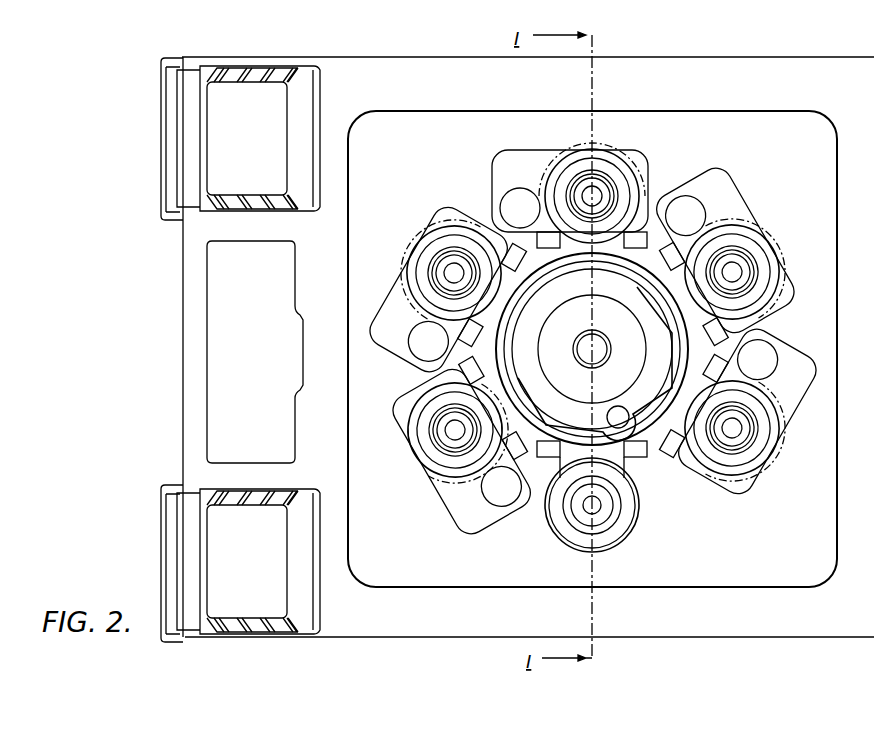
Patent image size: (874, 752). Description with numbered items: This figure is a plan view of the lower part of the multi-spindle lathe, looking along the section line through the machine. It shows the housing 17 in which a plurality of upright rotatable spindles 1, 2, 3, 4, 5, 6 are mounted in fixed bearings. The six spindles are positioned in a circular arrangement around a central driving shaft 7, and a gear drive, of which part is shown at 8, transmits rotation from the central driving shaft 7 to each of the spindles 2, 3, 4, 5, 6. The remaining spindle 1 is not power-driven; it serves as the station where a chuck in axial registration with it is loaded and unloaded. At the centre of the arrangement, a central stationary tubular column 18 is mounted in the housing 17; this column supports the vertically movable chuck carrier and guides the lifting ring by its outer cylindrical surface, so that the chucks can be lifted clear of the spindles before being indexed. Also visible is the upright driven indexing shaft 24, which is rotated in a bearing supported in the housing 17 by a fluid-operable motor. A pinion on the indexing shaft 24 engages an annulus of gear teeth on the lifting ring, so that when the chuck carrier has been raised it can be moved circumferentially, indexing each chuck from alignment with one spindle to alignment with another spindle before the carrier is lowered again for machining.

The spindle 1 is at (590, 503).
The spindle 2 is at (453, 438).
The spindle 3 is at (447, 274).
The spindle 4 is at (584, 194).
The spindle 5 is at (731, 266).
The spindle 6 is at (738, 427).
The central driving shaft 7 is at (598, 355).
The gear drive 8 is at (558, 143).
The housing 17 is at (377, 622).
The central stationary tubular column 18 is at (518, 387).
The indexing shaft 24 is at (622, 428).